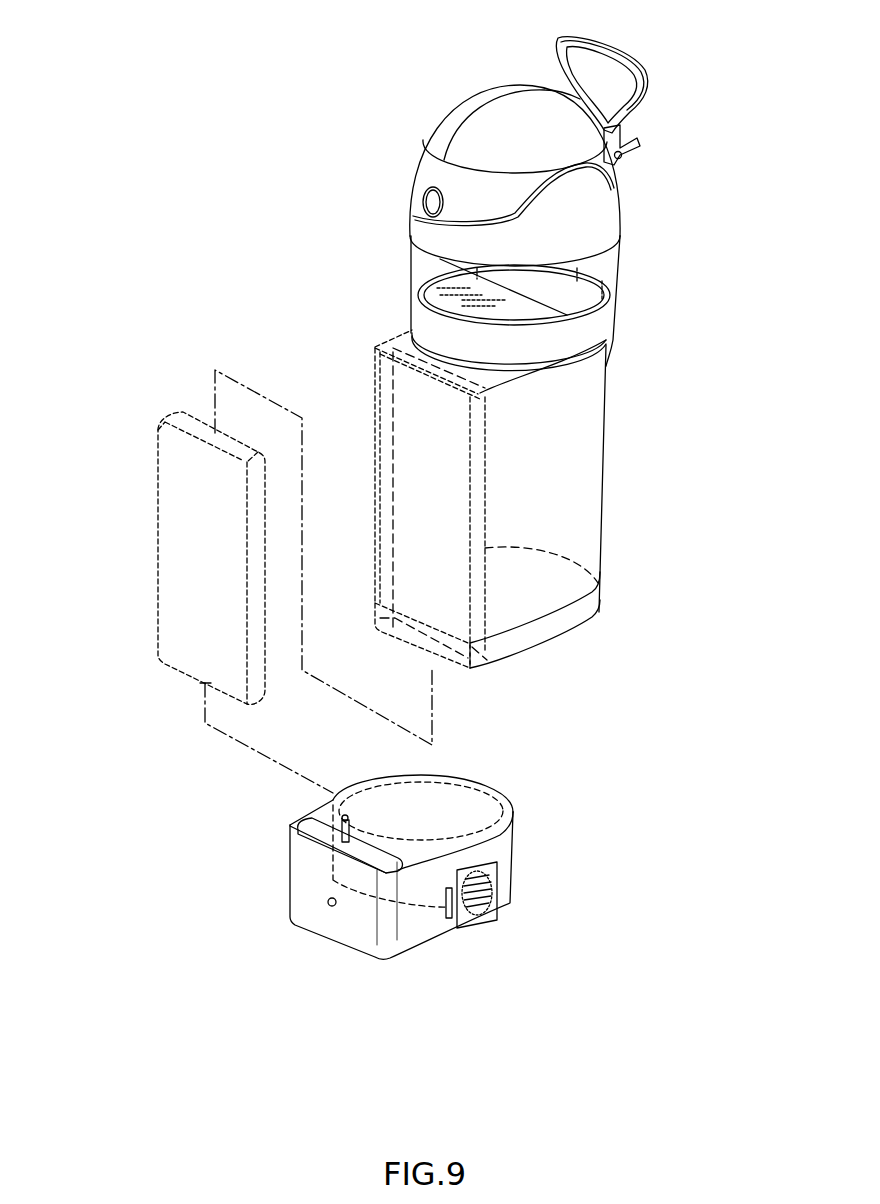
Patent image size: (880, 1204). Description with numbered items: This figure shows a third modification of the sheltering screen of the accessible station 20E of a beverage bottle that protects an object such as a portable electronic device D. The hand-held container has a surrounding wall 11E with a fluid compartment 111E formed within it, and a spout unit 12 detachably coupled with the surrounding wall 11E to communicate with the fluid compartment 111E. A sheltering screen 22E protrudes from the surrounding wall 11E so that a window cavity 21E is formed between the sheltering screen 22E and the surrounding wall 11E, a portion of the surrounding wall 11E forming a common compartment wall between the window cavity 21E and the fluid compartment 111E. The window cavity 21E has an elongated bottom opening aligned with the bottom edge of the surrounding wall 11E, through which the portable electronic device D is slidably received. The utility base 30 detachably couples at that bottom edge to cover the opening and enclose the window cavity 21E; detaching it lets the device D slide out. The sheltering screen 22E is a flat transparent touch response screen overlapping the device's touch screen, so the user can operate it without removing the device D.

The spout unit 12 is at (568, 222).
The fluid compartment 111E is at (553, 292).
The surrounding wall 11E is at (577, 465).
The accessible station 20E is at (278, 238).
The window cavity 21E is at (405, 386).
The sheltering screen 22E is at (373, 420).
The portable electronic device D is at (190, 595).
The utility base 30 is at (510, 887).